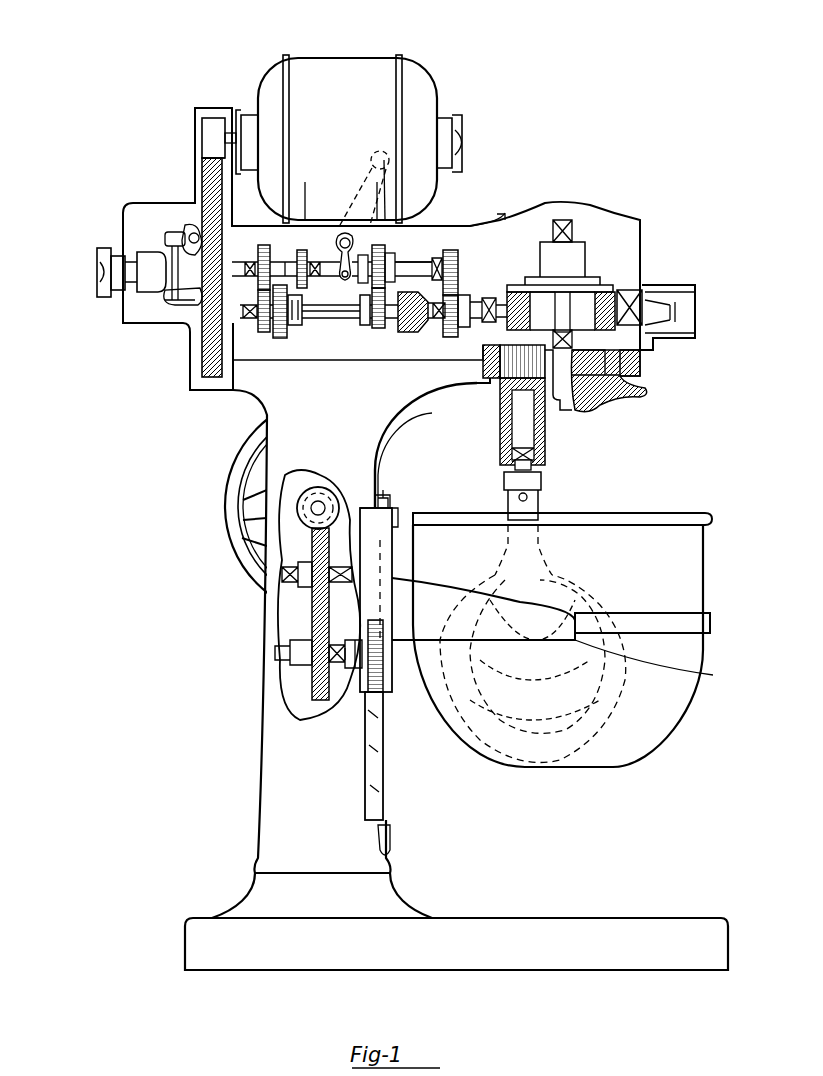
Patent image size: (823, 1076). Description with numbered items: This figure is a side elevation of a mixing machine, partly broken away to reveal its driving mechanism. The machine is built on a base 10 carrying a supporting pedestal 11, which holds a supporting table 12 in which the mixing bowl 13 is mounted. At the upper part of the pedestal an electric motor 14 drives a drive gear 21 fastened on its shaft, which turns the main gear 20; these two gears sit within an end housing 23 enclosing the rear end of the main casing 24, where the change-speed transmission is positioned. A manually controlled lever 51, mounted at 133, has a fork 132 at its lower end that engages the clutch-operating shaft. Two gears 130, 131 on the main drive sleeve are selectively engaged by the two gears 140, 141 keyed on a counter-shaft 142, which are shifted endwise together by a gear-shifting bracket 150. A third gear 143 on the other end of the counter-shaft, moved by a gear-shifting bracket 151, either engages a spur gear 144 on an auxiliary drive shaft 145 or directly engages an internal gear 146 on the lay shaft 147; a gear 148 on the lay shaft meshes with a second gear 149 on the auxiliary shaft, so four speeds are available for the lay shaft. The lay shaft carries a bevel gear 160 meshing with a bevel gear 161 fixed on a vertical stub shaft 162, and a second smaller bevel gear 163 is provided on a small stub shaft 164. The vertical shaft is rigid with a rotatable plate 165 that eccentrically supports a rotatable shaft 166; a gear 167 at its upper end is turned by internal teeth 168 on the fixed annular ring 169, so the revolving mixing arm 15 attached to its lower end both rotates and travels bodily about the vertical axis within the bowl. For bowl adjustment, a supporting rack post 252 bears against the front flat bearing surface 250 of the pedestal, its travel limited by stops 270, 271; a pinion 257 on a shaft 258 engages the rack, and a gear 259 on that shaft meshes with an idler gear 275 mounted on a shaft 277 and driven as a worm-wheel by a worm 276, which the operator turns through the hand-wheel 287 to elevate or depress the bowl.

The base 10 is at (570, 935).
The supporting pedestal 11 is at (285, 765).
The supporting table 12 is at (567, 635).
The mixing bowl 13 is at (660, 533).
The electric motor 14 is at (300, 72).
The revolving mixing arm 15 is at (528, 505).
The main gear 20 is at (200, 183).
The drive gear 21 is at (202, 135).
The end housing 23 is at (140, 205).
The main casing 24 is at (440, 222).
The manually controlled lever 51 is at (360, 190).
The gear 130 is at (266, 249).
The gear 131 is at (305, 251).
The fork 132 is at (342, 278).
The lever mounting 133 is at (360, 238).
The gear 140 is at (267, 333).
The gear 141 is at (283, 338).
The counter-shaft 142 is at (338, 322).
The third gear 143 is at (380, 330).
The spur gear 144 is at (410, 265).
The auxiliary drive shaft 145 is at (505, 213).
The internal gear 146 is at (412, 333).
The lay shaft 147 is at (478, 300).
The gear 148 is at (462, 305).
The second gear 149 is at (455, 268).
The gear-shifting bracket 150 is at (302, 320).
The gear-shifting bracket 151 is at (366, 328).
The bevel gear 160 is at (512, 330).
The bevel gear 161 is at (600, 288).
The vertical stub shaft 162 is at (575, 225).
The second smaller bevel gear 163 is at (645, 300).
The small stub shaft 164 is at (690, 330).
The rotatable plate 165 is at (600, 405).
The rotatable shaft 166 is at (530, 432).
The gear 167 is at (495, 382).
The internal teeth 168 is at (642, 357).
The fixed annular ring 169 is at (640, 376).
The front flat bearing surface 250 is at (385, 800).
The supporting rack post 252 is at (400, 512).
The pinion 257 is at (385, 670).
The shaft 258 is at (305, 722).
The gear 259 is at (316, 635).
The limiting stop 270 is at (383, 490).
The limiting stop 271 is at (390, 850).
The idler gear 275 is at (312, 600).
The worm 276 is at (300, 512).
The shaft 277 is at (298, 568).
The hand-wheel 287 is at (240, 468).